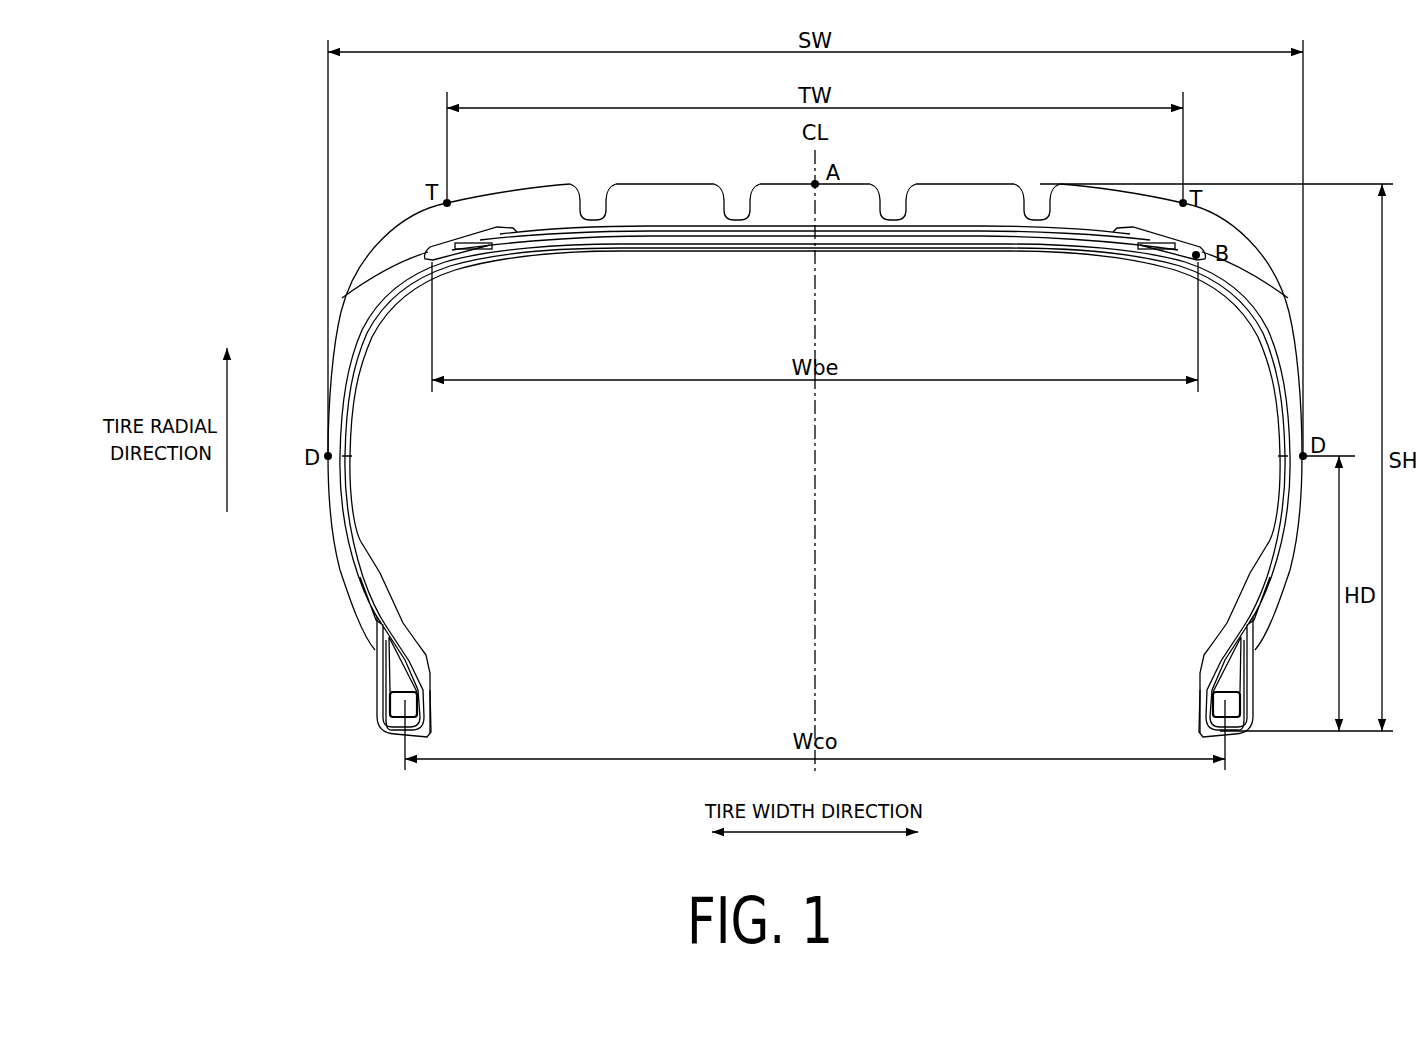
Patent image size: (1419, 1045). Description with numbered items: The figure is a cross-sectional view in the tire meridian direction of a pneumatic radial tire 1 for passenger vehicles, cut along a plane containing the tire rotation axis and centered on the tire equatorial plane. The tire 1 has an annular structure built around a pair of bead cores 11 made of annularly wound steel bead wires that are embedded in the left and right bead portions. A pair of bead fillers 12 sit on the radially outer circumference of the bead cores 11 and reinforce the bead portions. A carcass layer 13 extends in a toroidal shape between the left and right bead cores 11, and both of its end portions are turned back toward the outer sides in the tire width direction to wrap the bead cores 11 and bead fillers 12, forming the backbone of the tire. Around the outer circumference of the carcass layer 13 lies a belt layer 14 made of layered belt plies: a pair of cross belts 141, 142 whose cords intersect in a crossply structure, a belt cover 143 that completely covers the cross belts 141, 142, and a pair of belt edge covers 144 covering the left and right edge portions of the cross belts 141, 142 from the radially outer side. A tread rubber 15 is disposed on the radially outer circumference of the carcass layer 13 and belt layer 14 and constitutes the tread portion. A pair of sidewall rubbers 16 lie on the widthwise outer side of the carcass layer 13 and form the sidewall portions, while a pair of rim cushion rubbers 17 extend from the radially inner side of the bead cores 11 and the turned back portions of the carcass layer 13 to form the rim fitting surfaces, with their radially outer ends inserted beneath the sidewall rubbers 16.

The tire 1 is at (814, 425).
The bead core 11 is at (410, 705).
The bead filler 12 is at (403, 676).
The carcass layer 13 is at (1180, 263).
The belt layer 14 is at (815, 297).
The cross belt 141 is at (1100, 247).
The cross belt 142 is at (1057, 240).
The belt cover 143 is at (1017, 232).
The belt edge cover 144 is at (477, 245).
The tread rubber 15 is at (1127, 203).
The sidewall rubber 16 is at (347, 352).
The rim cushion rubber 17 is at (380, 703).